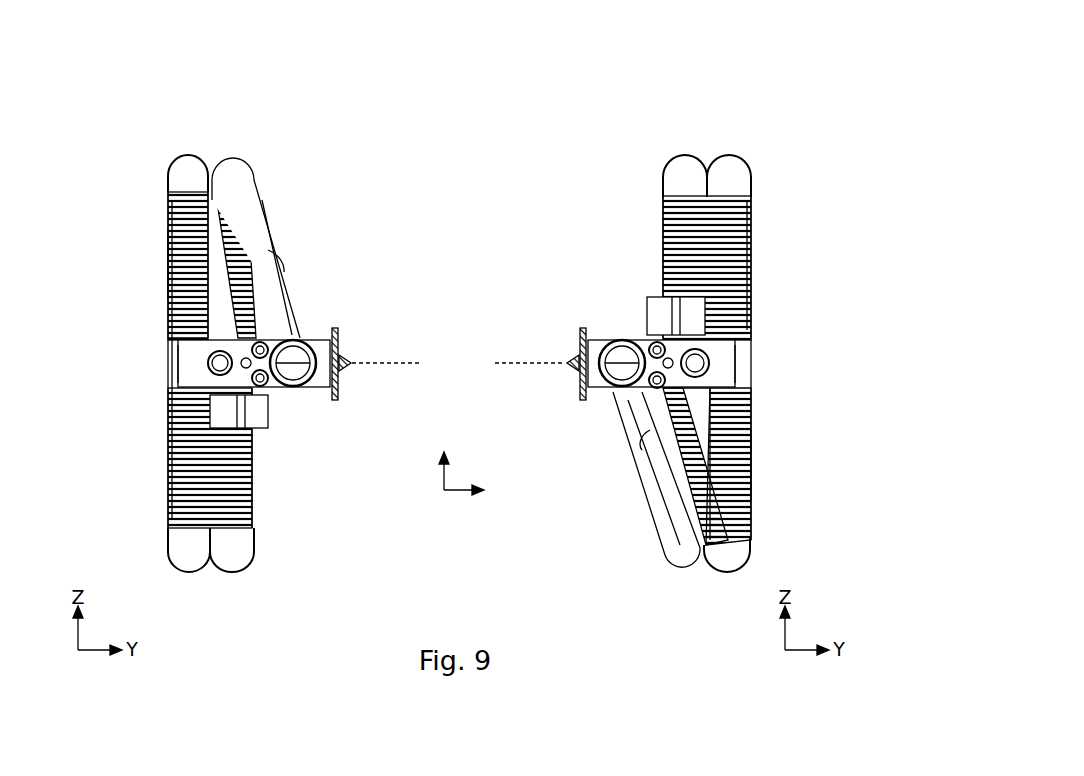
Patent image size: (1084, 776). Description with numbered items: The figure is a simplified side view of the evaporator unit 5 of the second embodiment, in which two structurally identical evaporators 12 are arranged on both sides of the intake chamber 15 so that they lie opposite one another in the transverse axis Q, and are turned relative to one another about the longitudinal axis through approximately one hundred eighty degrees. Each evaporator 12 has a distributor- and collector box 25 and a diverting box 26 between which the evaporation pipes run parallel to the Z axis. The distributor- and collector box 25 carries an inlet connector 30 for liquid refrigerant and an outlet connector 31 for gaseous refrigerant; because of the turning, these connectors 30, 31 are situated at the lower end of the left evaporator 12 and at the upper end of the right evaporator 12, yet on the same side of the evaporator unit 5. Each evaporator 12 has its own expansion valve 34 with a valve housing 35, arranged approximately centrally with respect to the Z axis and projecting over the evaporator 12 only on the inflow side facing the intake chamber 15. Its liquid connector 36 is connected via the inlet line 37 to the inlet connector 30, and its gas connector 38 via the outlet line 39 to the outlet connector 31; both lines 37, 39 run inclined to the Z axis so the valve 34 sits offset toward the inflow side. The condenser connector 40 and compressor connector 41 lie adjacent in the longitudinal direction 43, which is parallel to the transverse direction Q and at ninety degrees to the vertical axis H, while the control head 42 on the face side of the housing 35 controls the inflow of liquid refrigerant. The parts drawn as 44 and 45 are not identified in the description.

The evaporator unit 5 is at (878, 138).
The evaporator 12 is at (142, 205).
The intake chamber 15 is at (444, 549).
The distributor- and collector box 25 is at (762, 548).
The diverting box 26 is at (171, 146).
The inlet connector 30 is at (198, 158).
The outlet connector 31 is at (250, 168).
The expansion valve 34 is at (320, 325).
The valve housing 35 is at (188, 366).
The liquid connector 36 is at (170, 338).
The inlet line 37 is at (166, 262).
The gas connector 38 is at (283, 337).
The outlet line 39 is at (252, 213).
The condenser connector 40 is at (297, 387).
The compressor connector 41 is at (240, 380).
The control head 42 is at (340, 392).
The longitudinal direction 43 is at (395, 358).
The support body 44 is at (253, 500).
The outer wall 45 is at (168, 503).